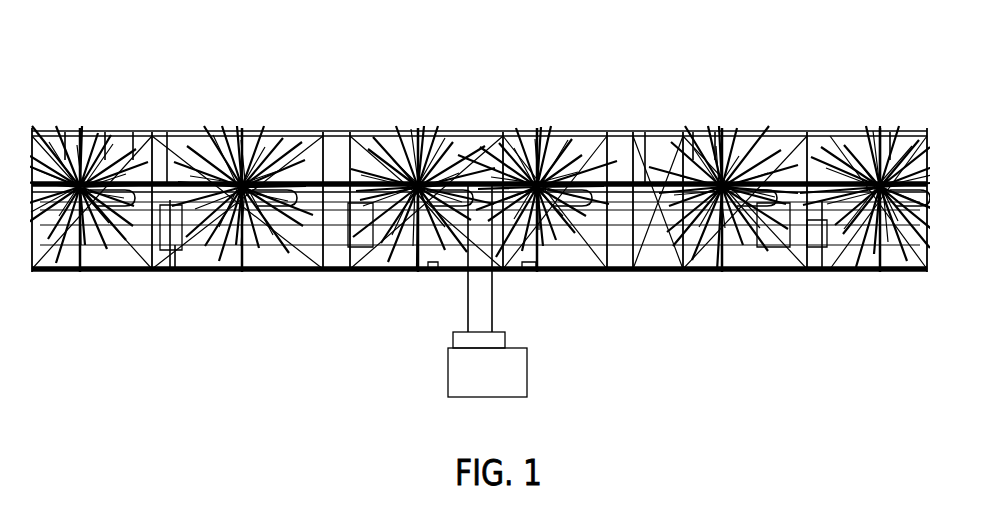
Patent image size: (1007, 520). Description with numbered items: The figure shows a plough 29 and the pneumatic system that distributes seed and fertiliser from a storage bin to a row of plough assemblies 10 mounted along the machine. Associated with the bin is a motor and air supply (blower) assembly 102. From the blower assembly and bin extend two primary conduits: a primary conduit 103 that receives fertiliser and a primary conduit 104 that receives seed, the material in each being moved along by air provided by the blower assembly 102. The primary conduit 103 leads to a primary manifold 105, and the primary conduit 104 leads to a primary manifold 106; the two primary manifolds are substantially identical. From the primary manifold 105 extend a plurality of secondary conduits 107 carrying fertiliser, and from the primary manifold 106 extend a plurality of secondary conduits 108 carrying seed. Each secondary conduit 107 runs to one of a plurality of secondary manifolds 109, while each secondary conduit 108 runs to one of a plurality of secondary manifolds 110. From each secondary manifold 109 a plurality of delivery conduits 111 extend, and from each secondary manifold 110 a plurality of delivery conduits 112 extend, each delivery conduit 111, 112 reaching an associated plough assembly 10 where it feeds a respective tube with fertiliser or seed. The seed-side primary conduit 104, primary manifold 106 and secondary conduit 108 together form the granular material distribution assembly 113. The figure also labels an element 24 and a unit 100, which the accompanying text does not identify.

The plough assembly 10 is at (241, 130).
The frame 24 is at (502, 130).
The plough 29 is at (596, 70).
The control unit 100 is at (487, 372).
The motor and air supply (blower) assembly 102 is at (512, 344).
The primary conduit 103 is at (467, 298).
The primary conduit 104 is at (495, 296).
The primary manifold 105 is at (432, 270).
The primary manifold 106 is at (530, 272).
The secondary conduits 107 is at (170, 272).
The secondary conduits 108 is at (167, 130).
The secondary manifold 109 is at (80, 275).
The secondary manifold 110 is at (65, 130).
The delivery conduits 111 is at (133, 130).
The delivery conduits 112 is at (105, 130).
The granular material distribution assembly 113 is at (175, 272).